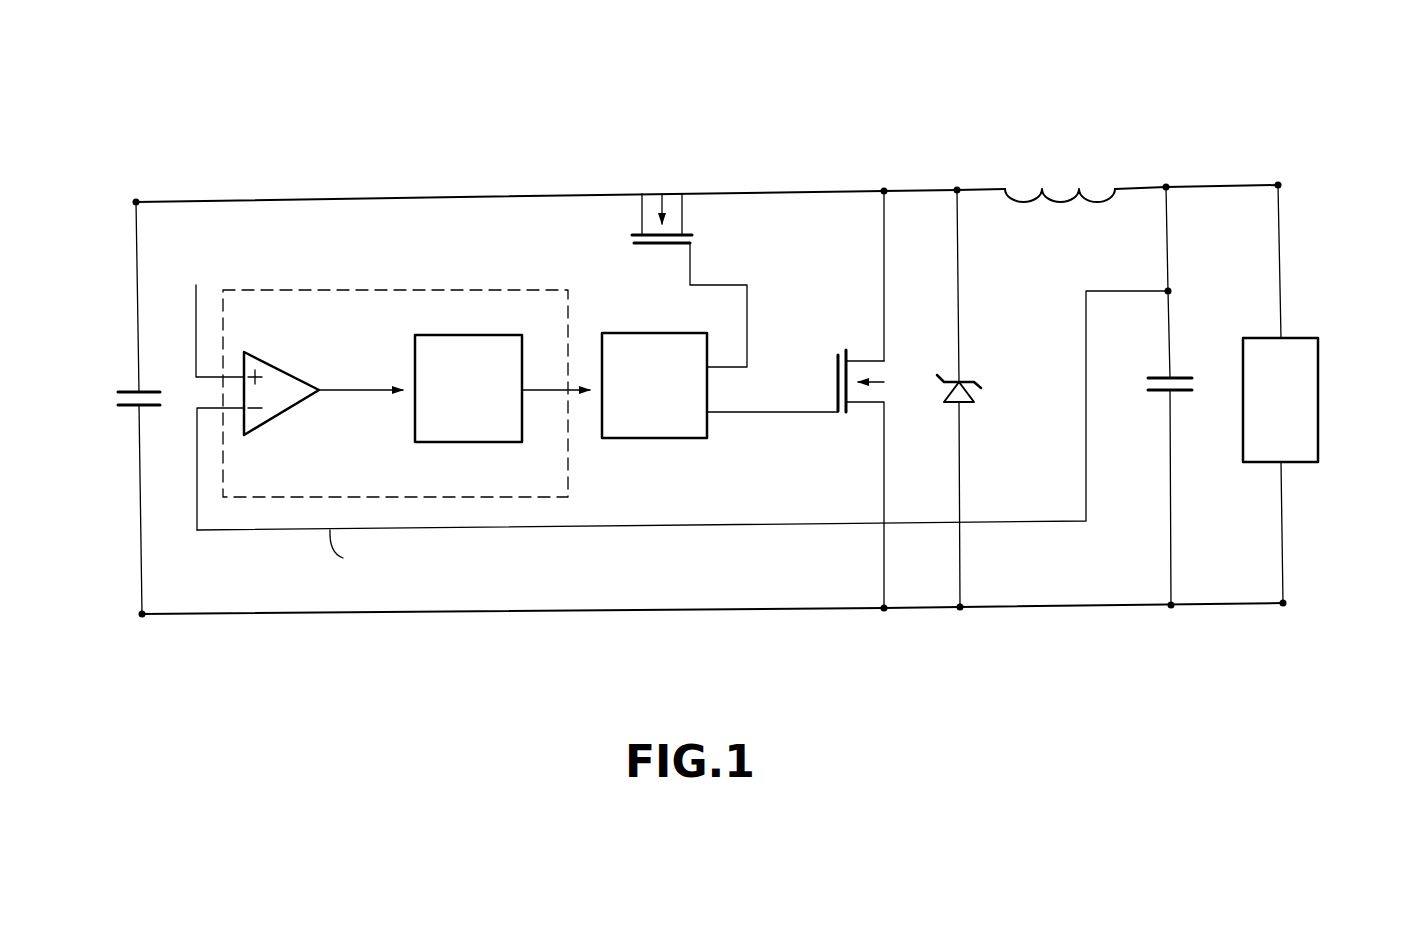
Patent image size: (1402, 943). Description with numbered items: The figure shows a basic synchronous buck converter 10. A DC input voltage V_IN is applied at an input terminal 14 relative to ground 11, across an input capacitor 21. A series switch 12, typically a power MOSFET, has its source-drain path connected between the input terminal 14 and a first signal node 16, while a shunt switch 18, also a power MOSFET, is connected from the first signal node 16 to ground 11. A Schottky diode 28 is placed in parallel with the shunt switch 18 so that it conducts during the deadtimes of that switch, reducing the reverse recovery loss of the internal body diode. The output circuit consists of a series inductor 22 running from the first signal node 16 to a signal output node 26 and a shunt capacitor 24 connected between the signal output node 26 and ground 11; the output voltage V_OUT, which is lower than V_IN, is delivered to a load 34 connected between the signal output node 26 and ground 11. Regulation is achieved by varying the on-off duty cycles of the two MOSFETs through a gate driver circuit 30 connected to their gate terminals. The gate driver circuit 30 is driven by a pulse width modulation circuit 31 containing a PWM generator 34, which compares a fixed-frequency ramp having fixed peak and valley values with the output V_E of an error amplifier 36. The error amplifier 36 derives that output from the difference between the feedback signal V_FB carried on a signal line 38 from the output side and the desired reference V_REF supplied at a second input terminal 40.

The synchronous buck converter 10 is at (428, 118).
The ground 11 is at (624, 608).
The series switch 12 is at (662, 246).
The input terminal 14 is at (136, 202).
The first signal node 16 is at (884, 191).
The shunt switch 18 is at (835, 368).
The input capacitor 21 is at (133, 410).
The series inductor 22 is at (1063, 188).
The shunt capacitor 24 is at (1163, 393).
The signal output node 26 is at (1166, 187).
The Schottky diode 28 is at (962, 405).
The gate control logic or driver circuit 30 is at (640, 443).
The pulse width modulation circuit 31 is at (433, 268).
The PWM generator 34 is at (453, 443).
The error amplifier 36 is at (280, 413).
The signal line 38 is at (658, 526).
The second input terminal 40 is at (196, 352).